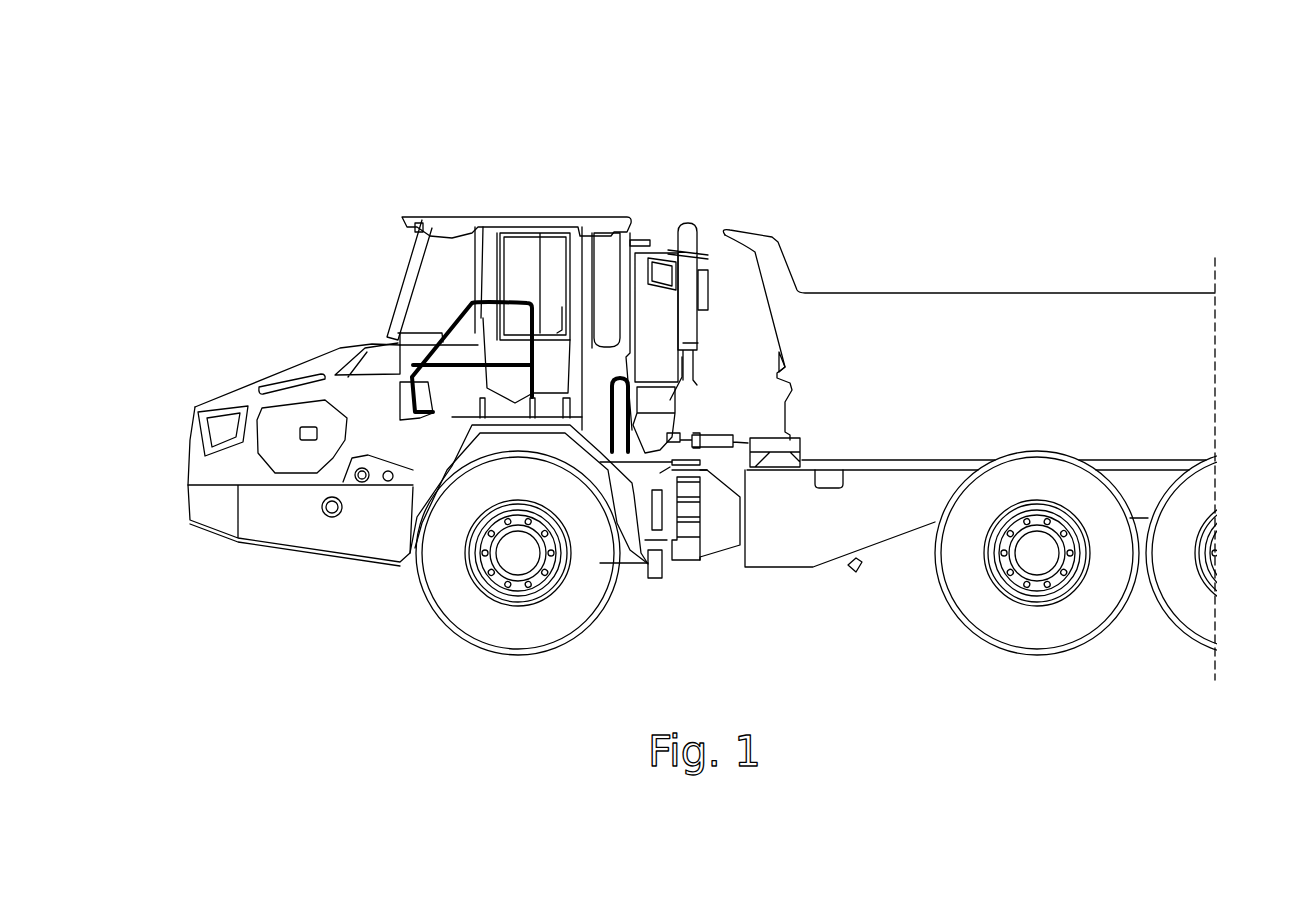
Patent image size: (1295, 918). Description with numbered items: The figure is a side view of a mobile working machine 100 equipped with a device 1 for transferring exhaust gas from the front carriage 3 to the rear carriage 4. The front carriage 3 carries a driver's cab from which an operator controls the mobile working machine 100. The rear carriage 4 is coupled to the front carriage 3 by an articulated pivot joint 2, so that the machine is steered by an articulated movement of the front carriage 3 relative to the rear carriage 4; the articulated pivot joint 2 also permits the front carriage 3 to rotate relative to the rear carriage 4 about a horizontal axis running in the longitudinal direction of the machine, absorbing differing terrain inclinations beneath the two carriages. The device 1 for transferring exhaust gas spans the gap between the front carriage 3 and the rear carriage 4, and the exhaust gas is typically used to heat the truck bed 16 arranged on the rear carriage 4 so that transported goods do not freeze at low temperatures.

The mobile working machine 100 is at (988, 157).
The front carriage 3 is at (400, 178).
The rear carriage 4 is at (922, 573).
The truck bed 16 is at (1090, 332).
The device for transferring exhaust gas 1 is at (737, 418).
The articulated pivot joint 2 is at (717, 587).